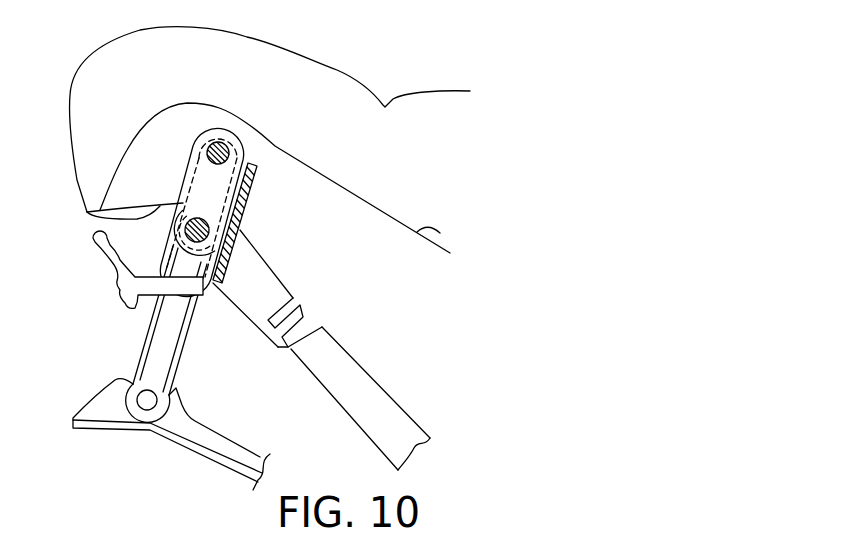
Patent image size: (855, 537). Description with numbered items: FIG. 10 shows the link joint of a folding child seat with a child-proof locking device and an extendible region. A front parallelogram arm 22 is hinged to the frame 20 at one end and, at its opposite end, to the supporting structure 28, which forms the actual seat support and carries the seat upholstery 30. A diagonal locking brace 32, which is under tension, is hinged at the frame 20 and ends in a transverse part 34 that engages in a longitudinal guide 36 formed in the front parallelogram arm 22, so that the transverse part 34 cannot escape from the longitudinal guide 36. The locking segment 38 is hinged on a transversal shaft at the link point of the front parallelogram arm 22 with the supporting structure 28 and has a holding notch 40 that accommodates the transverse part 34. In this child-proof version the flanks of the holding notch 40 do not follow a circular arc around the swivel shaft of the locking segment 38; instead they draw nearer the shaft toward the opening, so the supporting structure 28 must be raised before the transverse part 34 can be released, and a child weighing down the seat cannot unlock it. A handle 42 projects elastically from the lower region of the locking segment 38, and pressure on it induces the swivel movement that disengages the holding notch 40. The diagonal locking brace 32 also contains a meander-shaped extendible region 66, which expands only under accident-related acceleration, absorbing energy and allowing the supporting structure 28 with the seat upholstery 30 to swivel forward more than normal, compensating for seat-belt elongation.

The frame 20 is at (210, 445).
The front parallelogram arm 22 is at (167, 328).
The supporting structure 28 is at (440, 233).
The seat upholstery 30 is at (437, 108).
The diagonal locking brace 32 is at (412, 443).
The transverse part 34 is at (183, 205).
The longitudinal guide 36 is at (140, 355).
The locking segment 38 is at (244, 198).
The holding notch 40 is at (87, 211).
The handle 42 is at (117, 262).
The extendible region 66 is at (328, 300).